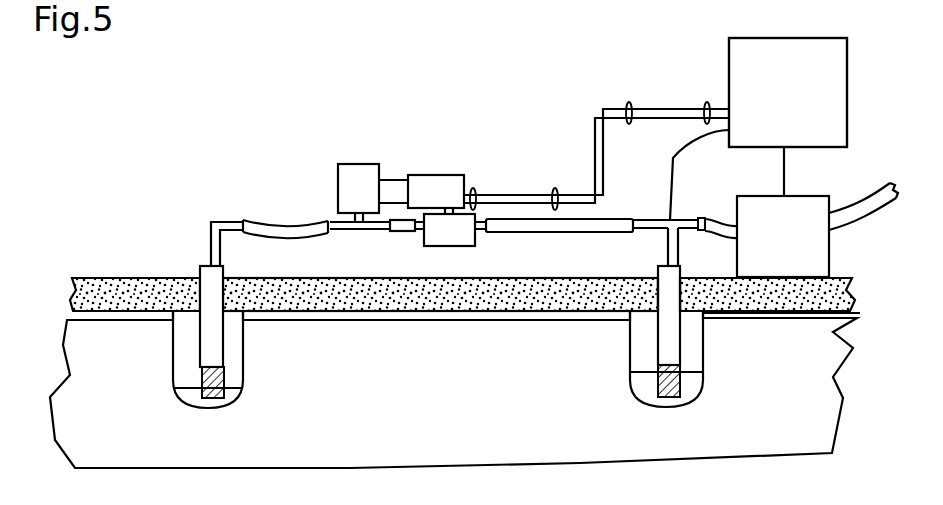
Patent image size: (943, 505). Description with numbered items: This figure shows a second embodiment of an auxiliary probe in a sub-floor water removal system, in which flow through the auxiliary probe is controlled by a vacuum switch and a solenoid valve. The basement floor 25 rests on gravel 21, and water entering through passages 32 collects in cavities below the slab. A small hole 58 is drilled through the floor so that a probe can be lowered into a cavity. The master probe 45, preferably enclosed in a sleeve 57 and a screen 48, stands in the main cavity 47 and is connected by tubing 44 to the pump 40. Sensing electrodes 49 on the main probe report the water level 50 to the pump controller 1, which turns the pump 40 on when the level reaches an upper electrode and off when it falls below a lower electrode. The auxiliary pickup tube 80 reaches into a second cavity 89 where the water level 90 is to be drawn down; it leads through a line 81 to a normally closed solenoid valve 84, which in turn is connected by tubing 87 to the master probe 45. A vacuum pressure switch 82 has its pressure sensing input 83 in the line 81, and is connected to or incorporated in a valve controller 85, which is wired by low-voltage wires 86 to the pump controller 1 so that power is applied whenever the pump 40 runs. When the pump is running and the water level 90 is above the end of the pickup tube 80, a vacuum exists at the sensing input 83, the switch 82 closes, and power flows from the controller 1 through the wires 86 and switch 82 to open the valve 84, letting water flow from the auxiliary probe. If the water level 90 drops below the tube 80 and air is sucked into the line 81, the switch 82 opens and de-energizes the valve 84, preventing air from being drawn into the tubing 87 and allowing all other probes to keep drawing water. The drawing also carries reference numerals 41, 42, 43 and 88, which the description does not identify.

The pump controller 1 is at (729, 66).
The gravel 21 is at (67, 353).
The basement floor 25 is at (100, 283).
The passages 32 is at (72, 316).
The pump 40 is at (749, 198).
The signal line 41 is at (782, 183).
The exhaust hose 42 is at (872, 198).
The signal line 43 is at (669, 165).
The tubing 44 is at (716, 221).
The master probe 45 is at (656, 219).
The main cavity 47 is at (652, 400).
The screen 48 is at (668, 398).
The sensing electrodes 49 is at (675, 398).
The water level 50 is at (693, 375).
The sleeve 57 is at (657, 271).
The hole 58 is at (652, 276).
The auxiliary pickup tube 80 is at (212, 223).
The line 81 is at (296, 226).
The vacuum pressure switch 82 is at (343, 182).
The pressure sensing input 83 is at (368, 230).
The solenoid valve 84 is at (437, 242).
The valve controller 85 is at (431, 175).
The wires 86 is at (533, 194).
The tubing 87 is at (570, 226).
The injection probe 88 is at (200, 280).
The cavity 89 is at (200, 400).
The water level 90 is at (237, 400).